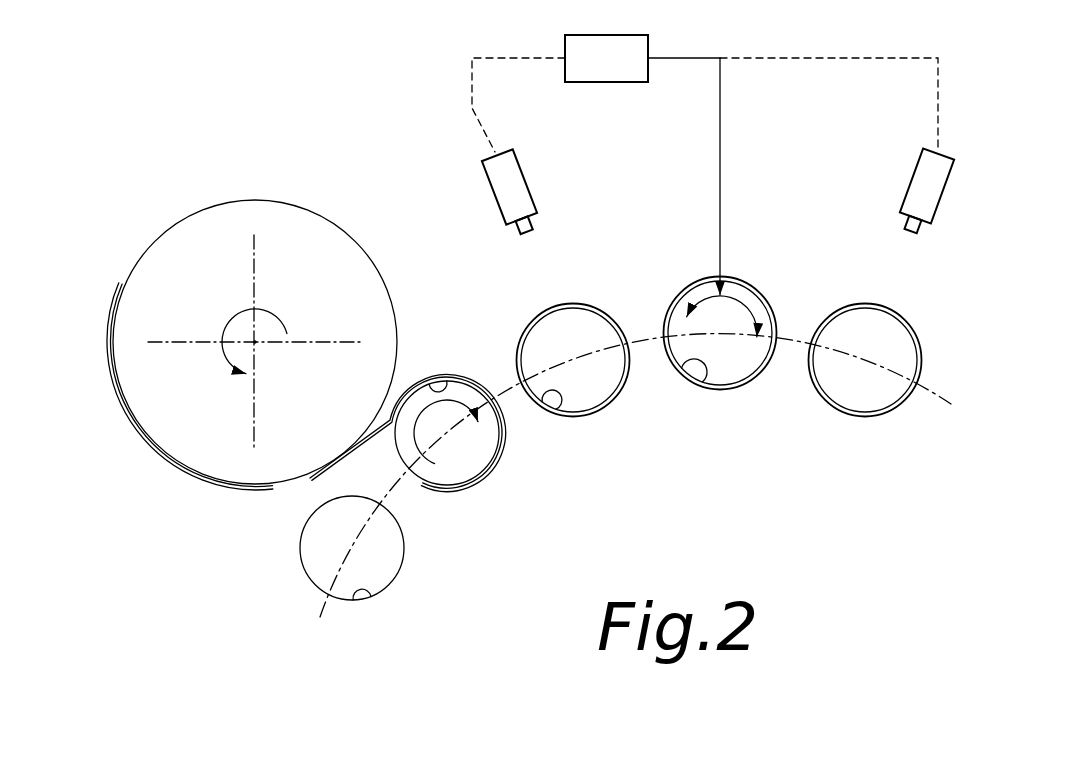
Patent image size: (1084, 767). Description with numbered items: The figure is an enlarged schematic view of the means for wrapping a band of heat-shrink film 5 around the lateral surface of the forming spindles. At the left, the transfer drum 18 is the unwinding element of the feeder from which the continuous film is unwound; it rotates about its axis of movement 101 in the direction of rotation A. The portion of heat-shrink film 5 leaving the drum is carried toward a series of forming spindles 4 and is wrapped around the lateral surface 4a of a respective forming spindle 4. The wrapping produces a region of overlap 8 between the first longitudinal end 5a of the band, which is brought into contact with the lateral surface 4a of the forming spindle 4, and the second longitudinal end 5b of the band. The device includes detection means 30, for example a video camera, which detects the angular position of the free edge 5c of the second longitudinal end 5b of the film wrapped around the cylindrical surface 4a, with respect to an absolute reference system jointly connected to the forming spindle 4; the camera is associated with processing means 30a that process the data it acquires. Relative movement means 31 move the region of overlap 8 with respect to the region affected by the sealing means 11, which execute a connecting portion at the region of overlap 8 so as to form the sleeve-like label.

The transfer drum 18 is at (292, 250).
The axis of movement 101 is at (259, 349).
The direction of rotation A is at (229, 320).
The heat-shrink film 5 is at (185, 488).
The first longitudinal end 5a is at (262, 497).
The second longitudinal end 5b is at (110, 313).
The free edge 5c is at (113, 300).
The forming spindle 4 is at (370, 560).
The lateral surface 4a is at (364, 601).
The region of overlap 8 is at (543, 302).
The detection means 30 is at (483, 175).
The processing means 30a is at (603, 73).
The relative movement means 31 is at (722, 193).
The sealing means 11 is at (897, 207).